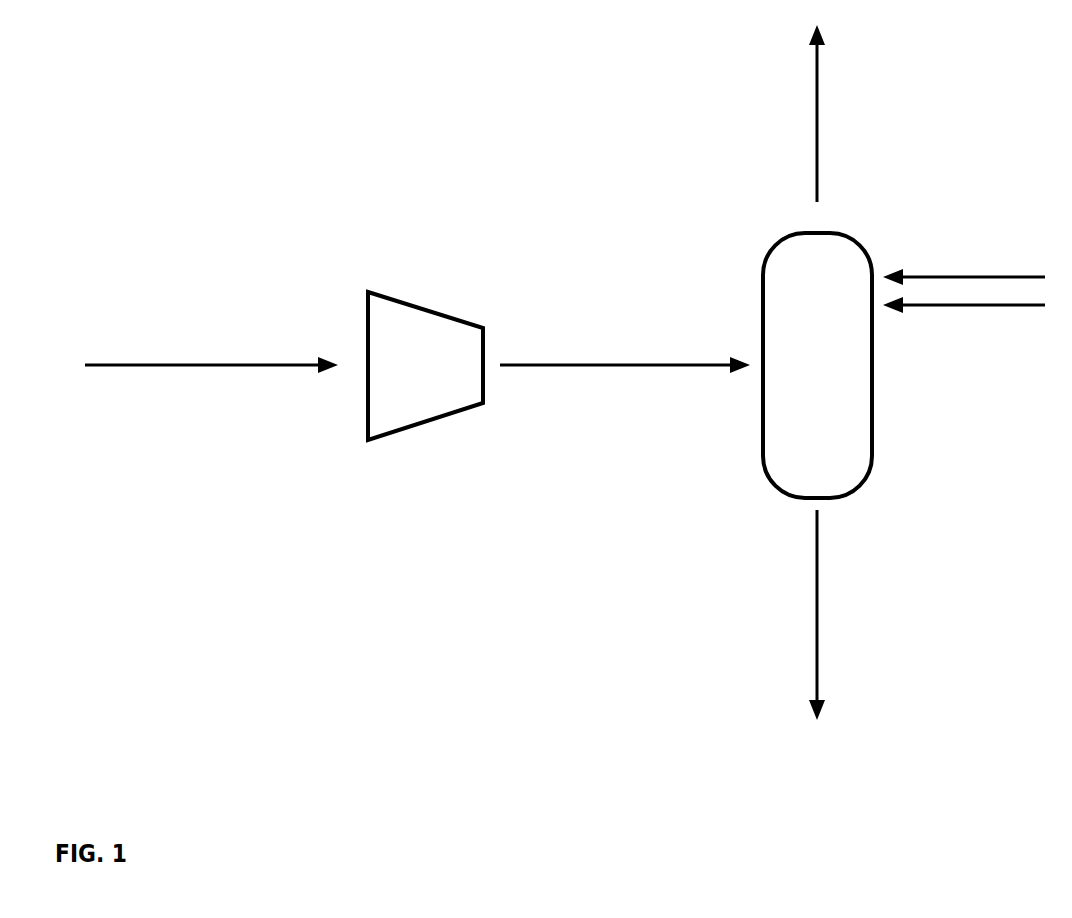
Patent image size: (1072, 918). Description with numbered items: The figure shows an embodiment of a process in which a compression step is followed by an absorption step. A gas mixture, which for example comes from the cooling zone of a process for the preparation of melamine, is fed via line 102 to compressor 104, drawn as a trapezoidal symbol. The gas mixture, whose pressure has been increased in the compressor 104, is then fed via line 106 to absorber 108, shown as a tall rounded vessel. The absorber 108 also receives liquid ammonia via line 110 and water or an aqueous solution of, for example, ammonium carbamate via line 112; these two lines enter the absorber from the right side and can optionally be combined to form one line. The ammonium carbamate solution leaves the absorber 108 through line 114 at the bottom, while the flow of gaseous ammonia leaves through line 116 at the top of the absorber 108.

The line 102 is at (211, 353).
The compressor 104 is at (442, 382).
The line 106 is at (625, 353).
The absorber 108 is at (840, 382).
The line 110 is at (964, 264).
The line 112 is at (964, 329).
The line 114 is at (845, 615).
The line 116 is at (845, 113).